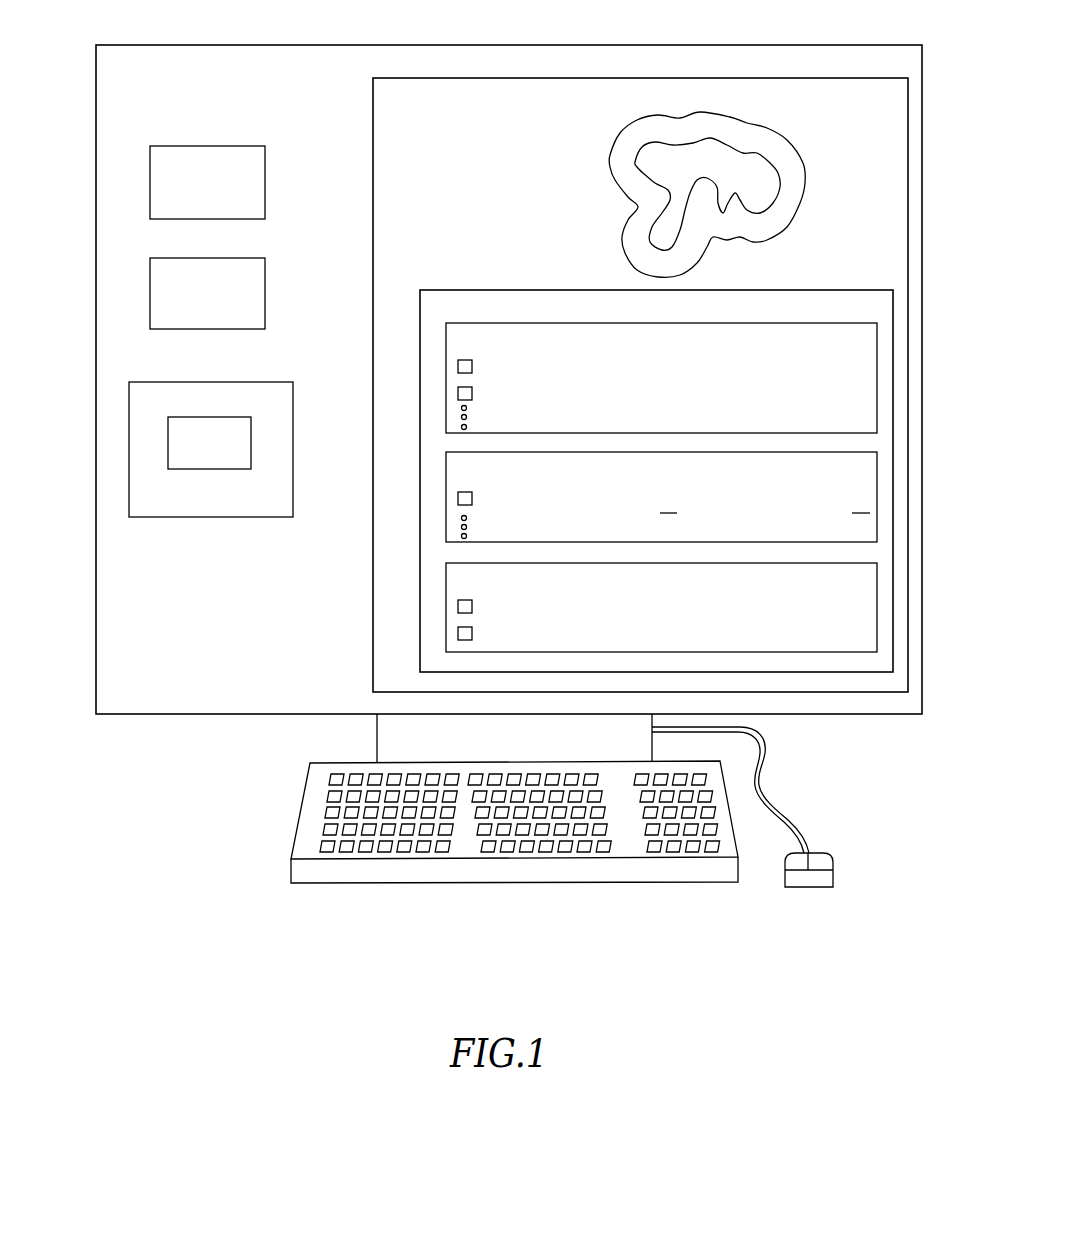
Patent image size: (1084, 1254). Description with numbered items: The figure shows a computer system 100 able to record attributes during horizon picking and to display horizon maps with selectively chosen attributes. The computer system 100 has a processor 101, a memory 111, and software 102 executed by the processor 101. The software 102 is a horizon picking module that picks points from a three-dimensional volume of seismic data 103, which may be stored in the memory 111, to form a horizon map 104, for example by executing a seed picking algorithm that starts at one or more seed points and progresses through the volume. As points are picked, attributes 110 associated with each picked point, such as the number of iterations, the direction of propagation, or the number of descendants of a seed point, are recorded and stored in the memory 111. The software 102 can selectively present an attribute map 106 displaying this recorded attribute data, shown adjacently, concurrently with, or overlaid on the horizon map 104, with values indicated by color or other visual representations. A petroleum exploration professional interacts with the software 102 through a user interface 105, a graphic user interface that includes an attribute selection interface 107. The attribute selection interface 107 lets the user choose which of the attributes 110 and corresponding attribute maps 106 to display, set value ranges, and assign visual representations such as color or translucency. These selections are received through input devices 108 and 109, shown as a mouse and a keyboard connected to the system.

The computer system 100 is at (848, 771).
The processor 101 is at (231, 199).
The software 102 is at (233, 311).
The seismic data 103 is at (232, 459).
The horizon map 104 is at (747, 122).
The user interface 105 is at (678, 78).
The attribute map 106 is at (780, 185).
The attribute selection interface 107 is at (813, 288).
The input device 108 is at (784, 873).
The input device 109 is at (302, 810).
The attributes 110 is at (695, 360).
The memory 111 is at (272, 502).